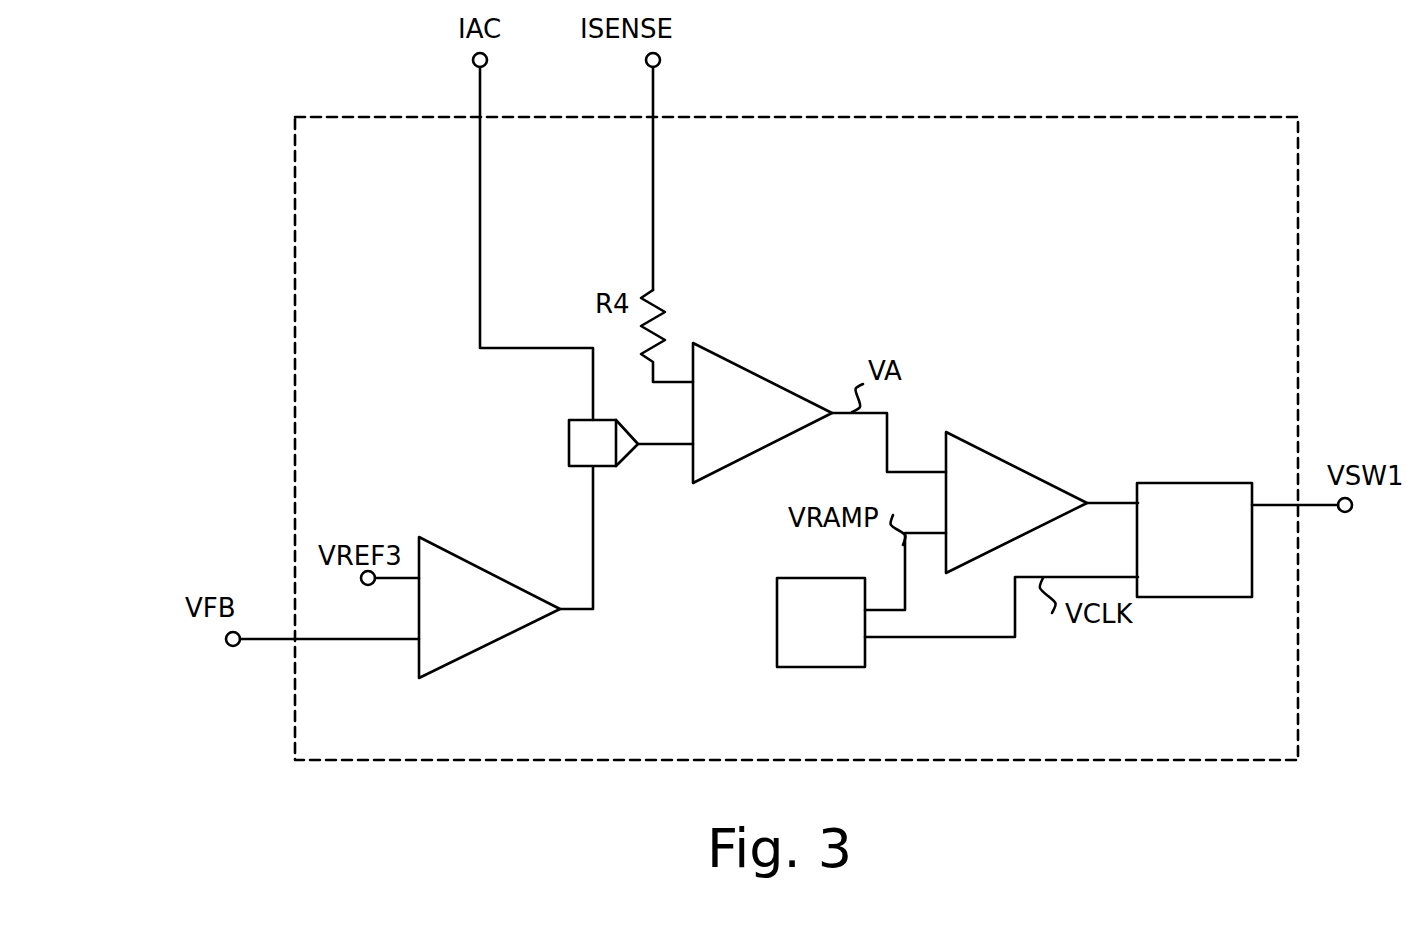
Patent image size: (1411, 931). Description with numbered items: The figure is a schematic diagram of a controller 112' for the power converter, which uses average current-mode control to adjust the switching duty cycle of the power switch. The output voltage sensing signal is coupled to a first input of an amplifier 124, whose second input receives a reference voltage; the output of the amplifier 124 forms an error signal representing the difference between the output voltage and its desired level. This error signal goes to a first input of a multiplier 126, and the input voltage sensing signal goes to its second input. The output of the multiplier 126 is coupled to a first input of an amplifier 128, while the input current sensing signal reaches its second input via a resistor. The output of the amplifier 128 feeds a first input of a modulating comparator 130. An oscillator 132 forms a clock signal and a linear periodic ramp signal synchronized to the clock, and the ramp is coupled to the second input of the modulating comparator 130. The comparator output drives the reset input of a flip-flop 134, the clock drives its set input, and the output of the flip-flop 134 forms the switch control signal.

The controller 112' is at (796, 410).
The amplifier 124 is at (500, 639).
The multiplier 126 is at (569, 450).
The amplifier 128 is at (747, 370).
The modulating comparator 130 is at (955, 437).
The oscillator 132 is at (823, 667).
The flip-flop 134 is at (1175, 597).